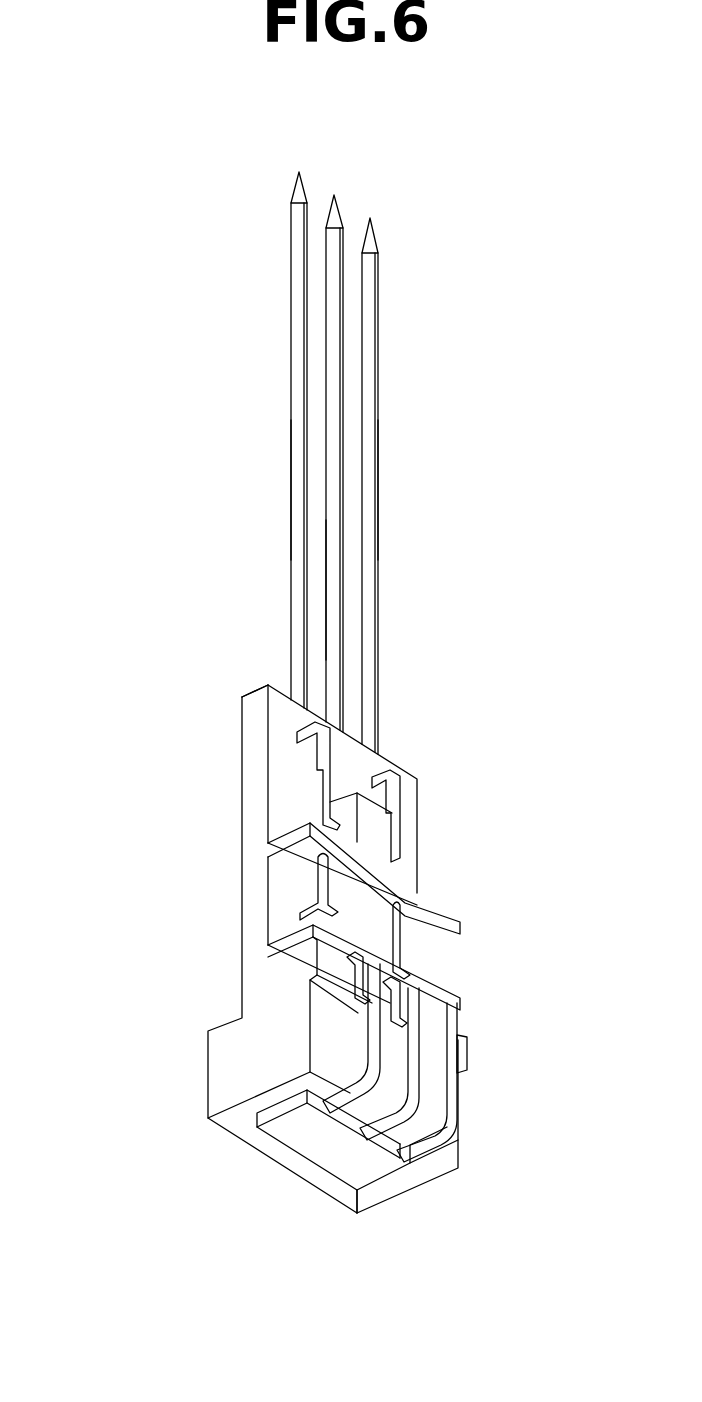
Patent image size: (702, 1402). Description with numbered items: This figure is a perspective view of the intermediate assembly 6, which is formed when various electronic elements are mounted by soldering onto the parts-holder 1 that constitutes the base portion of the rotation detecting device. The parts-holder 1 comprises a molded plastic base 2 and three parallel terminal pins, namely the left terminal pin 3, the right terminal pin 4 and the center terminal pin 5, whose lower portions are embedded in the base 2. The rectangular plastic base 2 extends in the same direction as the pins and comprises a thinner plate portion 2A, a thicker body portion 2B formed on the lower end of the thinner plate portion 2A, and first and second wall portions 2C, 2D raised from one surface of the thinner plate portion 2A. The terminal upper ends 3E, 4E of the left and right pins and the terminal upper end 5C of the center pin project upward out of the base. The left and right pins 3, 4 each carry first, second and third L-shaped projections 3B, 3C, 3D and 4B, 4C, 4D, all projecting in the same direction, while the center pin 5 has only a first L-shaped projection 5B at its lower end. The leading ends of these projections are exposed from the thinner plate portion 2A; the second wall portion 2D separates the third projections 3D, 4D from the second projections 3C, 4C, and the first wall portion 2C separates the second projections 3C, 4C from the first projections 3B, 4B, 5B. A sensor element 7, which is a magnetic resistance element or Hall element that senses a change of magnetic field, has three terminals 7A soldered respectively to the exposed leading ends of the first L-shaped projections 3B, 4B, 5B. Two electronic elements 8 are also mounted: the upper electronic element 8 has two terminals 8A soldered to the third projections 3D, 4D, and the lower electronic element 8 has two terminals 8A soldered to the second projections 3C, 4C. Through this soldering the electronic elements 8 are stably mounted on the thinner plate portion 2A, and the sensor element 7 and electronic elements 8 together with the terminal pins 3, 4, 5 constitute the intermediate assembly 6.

The parts-holder 1 is at (197, 1091).
The molded plastic base 2 is at (347, 738).
The thinner plate portion 2A is at (238, 690).
The thicker body portion 2B is at (395, 1187).
The first wall portion 2C is at (277, 942).
The second wall portion 2D is at (305, 830).
The left terminal pin 3 is at (298, 274).
The first L-shaped projection 3B is at (313, 1020).
The second L-shaped projection 3C is at (300, 852).
The third L-shaped projection 3D is at (296, 733).
The terminal upper end 3E is at (292, 491).
The right terminal pin 4 is at (378, 352).
The first L-shaped projection 4B is at (437, 1027).
The second L-shaped projection 4C is at (403, 905).
The third L-shaped projection 4D is at (406, 778).
The terminal upper end 4E is at (380, 500).
The center terminal pin 5 is at (333, 384).
The first L-shaped projection 5B is at (465, 1065).
The terminal upper end 5C is at (333, 585).
The intermediate assembly 6 is at (394, 596).
The sensor element 7 is at (282, 1131).
The terminals 7A is at (300, 1130).
The electronic elements 8 is at (380, 828).
The terminals 8A is at (325, 795).